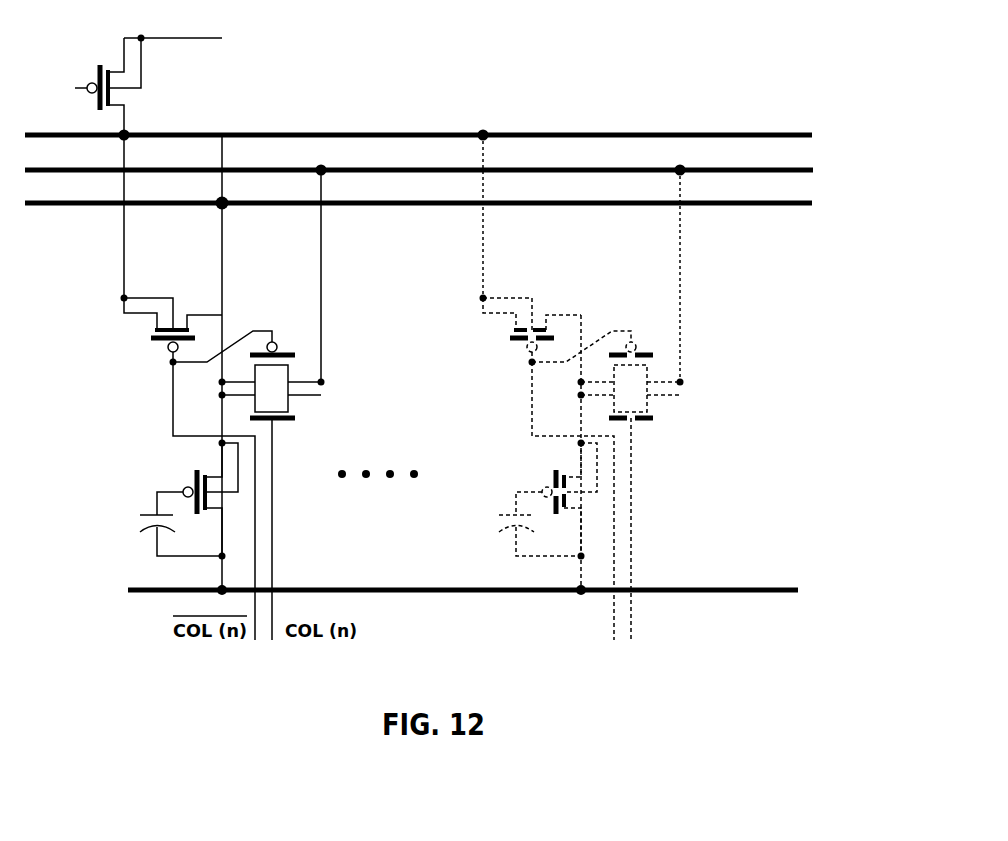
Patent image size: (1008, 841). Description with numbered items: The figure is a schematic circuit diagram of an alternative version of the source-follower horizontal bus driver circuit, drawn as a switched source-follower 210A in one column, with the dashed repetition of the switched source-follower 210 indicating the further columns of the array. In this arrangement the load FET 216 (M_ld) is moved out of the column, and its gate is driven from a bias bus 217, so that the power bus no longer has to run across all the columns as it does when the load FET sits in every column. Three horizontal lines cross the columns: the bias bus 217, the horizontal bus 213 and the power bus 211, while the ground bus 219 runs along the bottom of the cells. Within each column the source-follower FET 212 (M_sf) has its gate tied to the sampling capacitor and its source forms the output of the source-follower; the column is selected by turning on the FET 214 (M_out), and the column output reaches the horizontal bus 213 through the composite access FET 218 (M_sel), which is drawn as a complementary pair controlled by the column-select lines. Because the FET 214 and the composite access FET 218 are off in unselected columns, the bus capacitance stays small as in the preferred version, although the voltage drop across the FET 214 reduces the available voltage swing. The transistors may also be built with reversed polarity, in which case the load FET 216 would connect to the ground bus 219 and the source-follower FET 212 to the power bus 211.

The load FET 216 is at (98, 107).
The bias bus 217 is at (563, 133).
The horizontal bus 213 is at (395, 170).
The power bus 211 is at (403, 205).
The ground bus 219 is at (445, 593).
The FET M_out 214 is at (153, 342).
The composite access FET 218 is at (338, 350).
The source-follower FET 212 is at (196, 474).
The switched source-follower 210A is at (209, 464).
The switched source-follower 210 is at (722, 455).